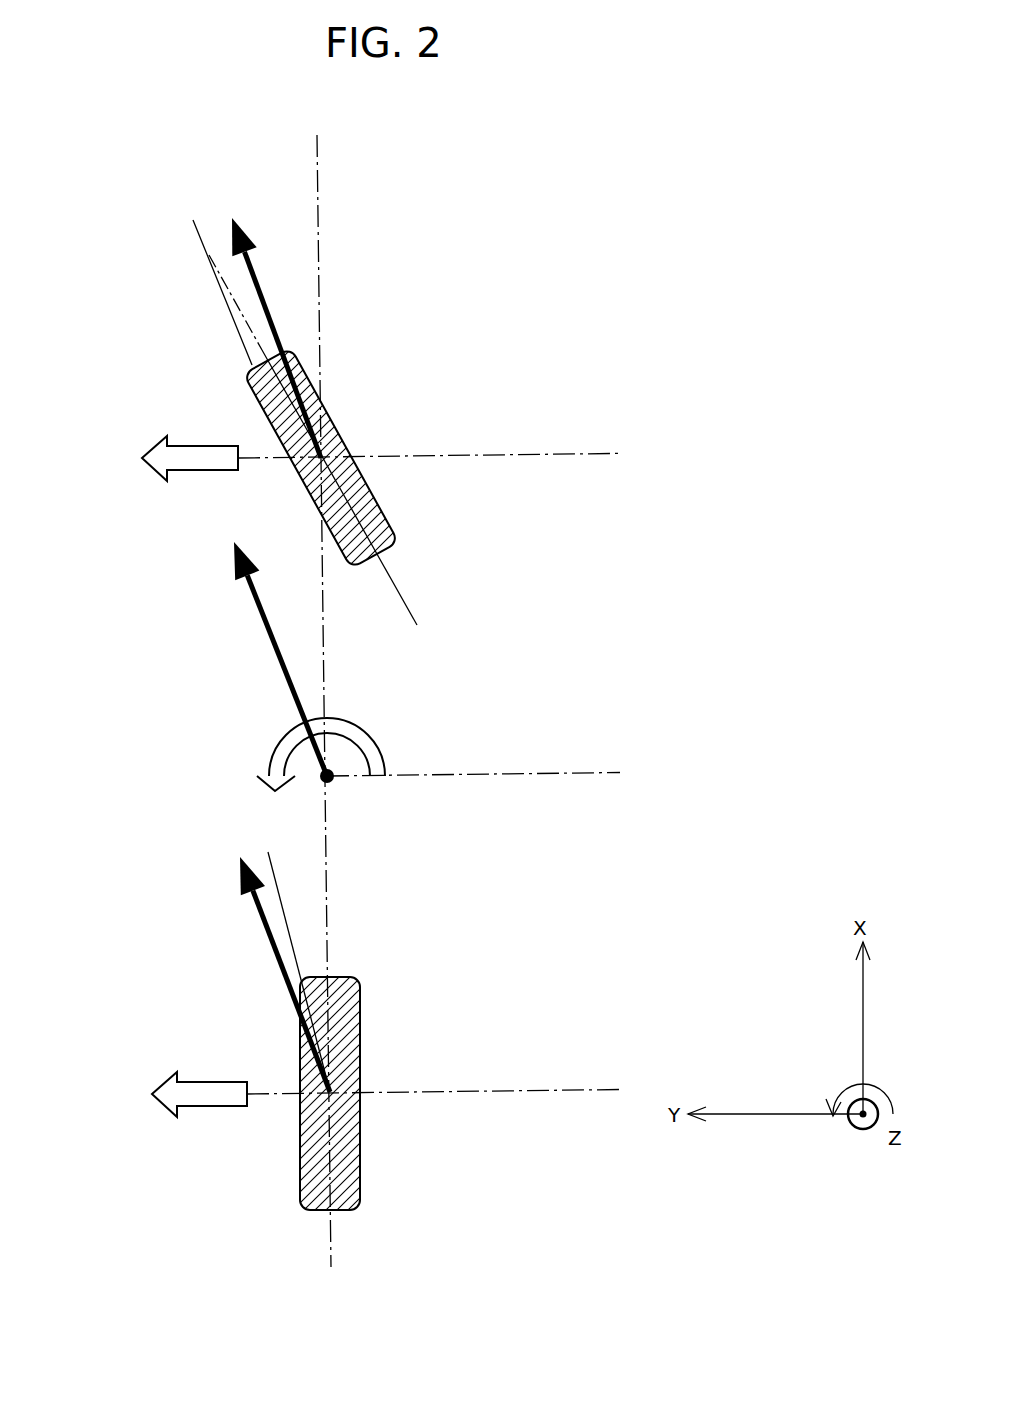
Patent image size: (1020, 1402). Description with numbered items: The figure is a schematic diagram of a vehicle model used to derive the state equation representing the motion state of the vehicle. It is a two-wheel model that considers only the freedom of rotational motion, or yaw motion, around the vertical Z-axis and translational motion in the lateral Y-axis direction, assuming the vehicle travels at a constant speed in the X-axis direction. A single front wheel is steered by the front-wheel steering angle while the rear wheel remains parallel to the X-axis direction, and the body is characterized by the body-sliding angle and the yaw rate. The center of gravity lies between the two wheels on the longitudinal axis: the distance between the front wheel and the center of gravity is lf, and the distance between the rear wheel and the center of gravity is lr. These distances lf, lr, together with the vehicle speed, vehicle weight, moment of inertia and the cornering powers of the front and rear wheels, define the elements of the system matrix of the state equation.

The distance between a front wheel and a center of gravity lf is at (588, 453).
The distance between a rear wheel and the center of gravity lr is at (592, 773).